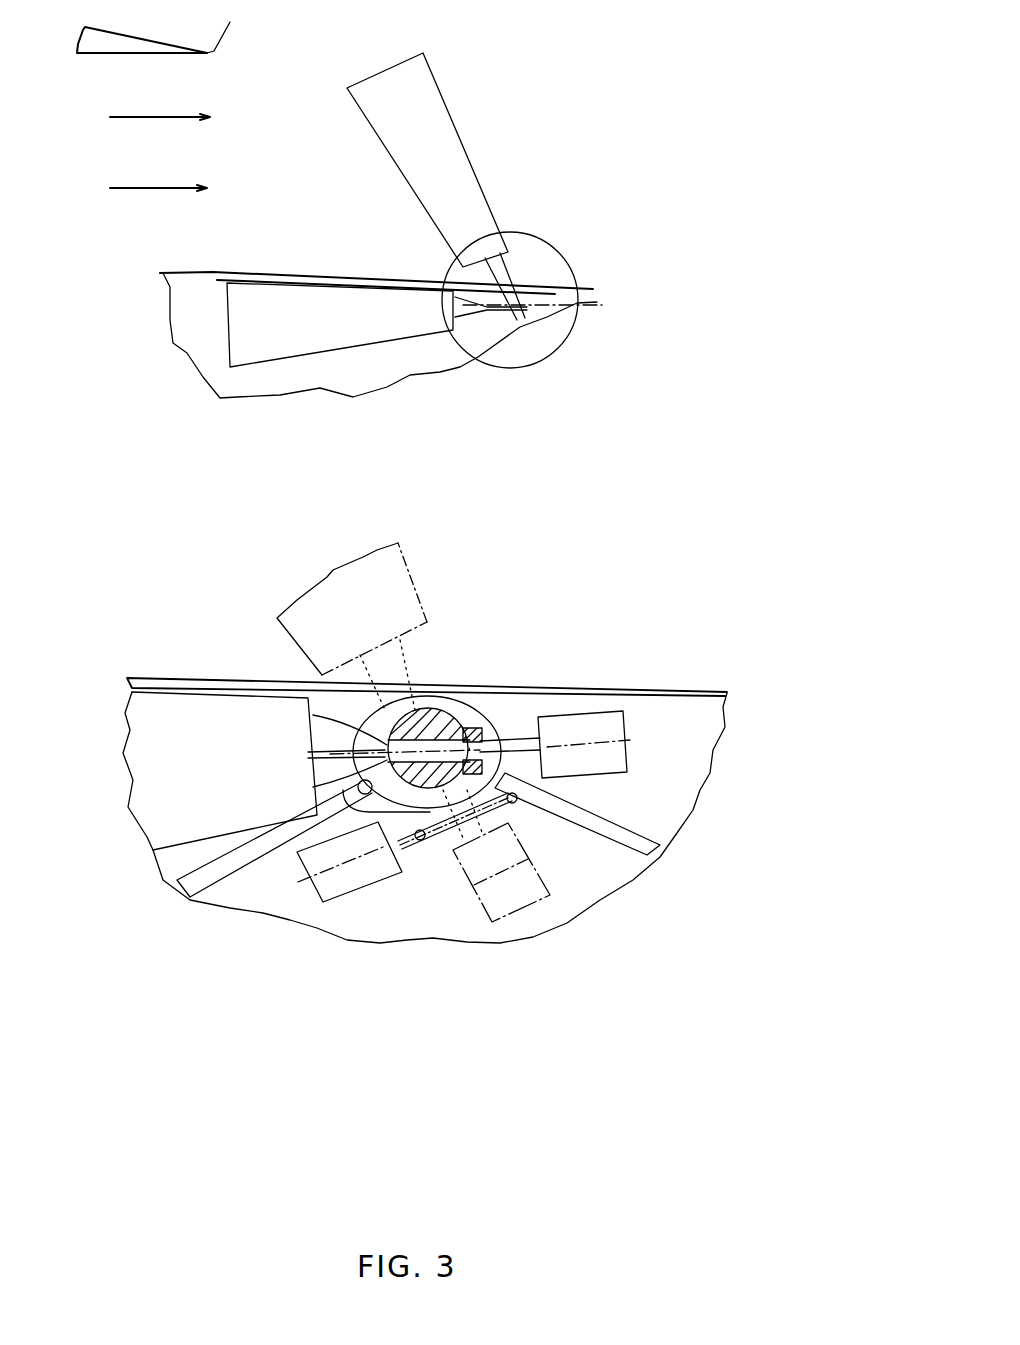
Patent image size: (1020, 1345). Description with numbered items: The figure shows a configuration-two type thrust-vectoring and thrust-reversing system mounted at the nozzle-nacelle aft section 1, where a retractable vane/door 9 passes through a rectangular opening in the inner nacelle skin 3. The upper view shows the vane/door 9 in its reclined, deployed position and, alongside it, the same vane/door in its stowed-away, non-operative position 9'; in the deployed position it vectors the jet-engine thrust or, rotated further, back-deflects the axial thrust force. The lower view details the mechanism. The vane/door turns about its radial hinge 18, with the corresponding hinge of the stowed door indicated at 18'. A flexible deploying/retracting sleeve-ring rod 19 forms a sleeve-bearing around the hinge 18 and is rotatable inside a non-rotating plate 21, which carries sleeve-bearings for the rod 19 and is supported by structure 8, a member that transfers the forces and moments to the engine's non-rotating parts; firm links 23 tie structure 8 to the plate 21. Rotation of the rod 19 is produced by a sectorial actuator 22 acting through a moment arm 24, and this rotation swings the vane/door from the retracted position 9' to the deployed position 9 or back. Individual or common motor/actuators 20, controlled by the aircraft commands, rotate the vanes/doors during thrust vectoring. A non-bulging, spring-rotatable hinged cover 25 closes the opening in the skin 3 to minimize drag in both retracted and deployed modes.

The nozzle-nacelle aft section 1 is at (161, 100).
The inner nacelle skin 3 is at (547, 288).
The added structure 8 is at (570, 815).
The configuration-2 type TVFC/TR vane/door 9 is at (384, 364).
The stowed vane/door position 9' is at (402, 608).
The radial hinge 18 is at (418, 657).
The second nozzle tip 18' is at (296, 698).
The flexible deploying/retracting sleeve-ring-sectorial rod/bearing 19 is at (440, 710).
The TVFC/TR motor/actuator 20 is at (618, 735).
The non-rotating plate 21 is at (373, 732).
The sectorial actuator 22 is at (330, 887).
The firm links 23 is at (500, 820).
The moment arm 24 is at (470, 770).
The hinged spring-cover 25 is at (235, 273).